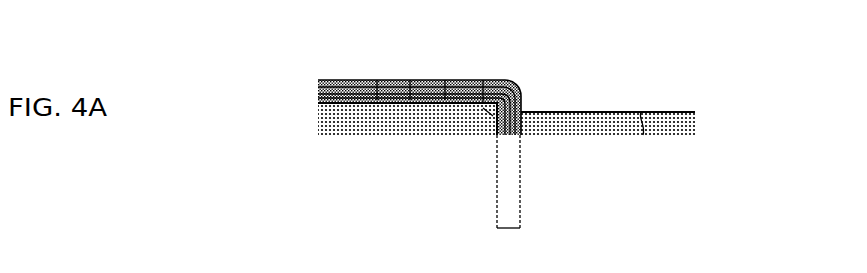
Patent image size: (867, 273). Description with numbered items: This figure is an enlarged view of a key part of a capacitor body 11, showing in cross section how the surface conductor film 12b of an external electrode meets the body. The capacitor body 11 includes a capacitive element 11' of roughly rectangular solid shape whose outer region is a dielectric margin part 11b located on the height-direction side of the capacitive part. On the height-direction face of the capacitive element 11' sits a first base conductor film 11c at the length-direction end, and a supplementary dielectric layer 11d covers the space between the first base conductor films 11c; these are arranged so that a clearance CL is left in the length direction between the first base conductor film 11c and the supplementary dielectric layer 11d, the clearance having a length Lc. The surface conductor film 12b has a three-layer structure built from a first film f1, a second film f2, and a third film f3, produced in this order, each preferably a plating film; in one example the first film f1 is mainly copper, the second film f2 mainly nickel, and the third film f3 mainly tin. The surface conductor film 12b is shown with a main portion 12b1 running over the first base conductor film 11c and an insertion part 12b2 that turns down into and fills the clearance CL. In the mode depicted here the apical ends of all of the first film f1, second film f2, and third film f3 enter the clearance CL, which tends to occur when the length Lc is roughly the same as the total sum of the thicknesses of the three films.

The capacitor body 11 is at (608, 83).
The capacitive element 11' is at (639, 93).
The dielectric margin part 11b is at (685, 165).
The first base conductor film 11c is at (325, 118).
The supplementary dielectric layer 11d is at (685, 120).
The surface conductor film 12b is at (318, 86).
The surface conductor film main part 12b1 is at (340, 80).
The insertion part 12b2 is at (526, 110).
The first film f1 is at (377, 80).
The second film f2 is at (410, 80).
The third film f3 is at (445, 80).
The clearance CL is at (483, 80).
The length of clearance Lc is at (508, 194).